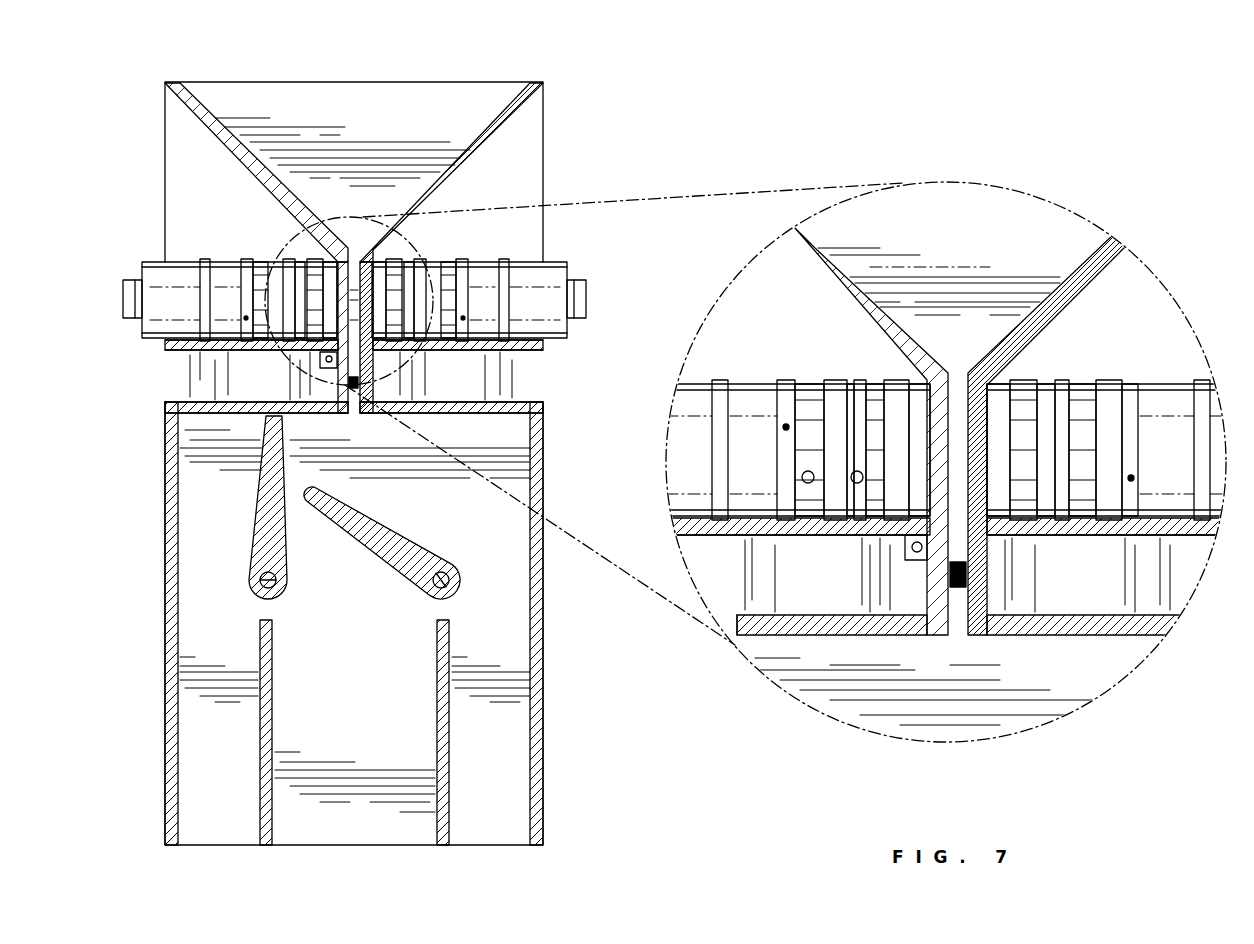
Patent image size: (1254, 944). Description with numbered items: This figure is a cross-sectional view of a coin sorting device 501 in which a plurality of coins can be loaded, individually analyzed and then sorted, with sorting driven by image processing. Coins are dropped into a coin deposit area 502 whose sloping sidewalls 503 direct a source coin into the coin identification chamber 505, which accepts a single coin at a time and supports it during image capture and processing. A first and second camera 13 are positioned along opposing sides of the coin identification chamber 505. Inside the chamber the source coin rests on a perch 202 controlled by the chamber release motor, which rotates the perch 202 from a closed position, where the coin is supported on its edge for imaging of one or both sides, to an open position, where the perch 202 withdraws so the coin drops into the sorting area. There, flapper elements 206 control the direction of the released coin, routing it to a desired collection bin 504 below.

The feed assembly 501 is at (600, 82).
The coin deposit area 502 is at (405, 120).
The sloping sidewalls 503 is at (249, 161).
The coin identification chamber 505 is at (357, 256).
The camera 13 is at (207, 226).
The perch 202 is at (322, 358).
The flapper elements 206 is at (258, 512).
The collection bin 504 is at (222, 792).